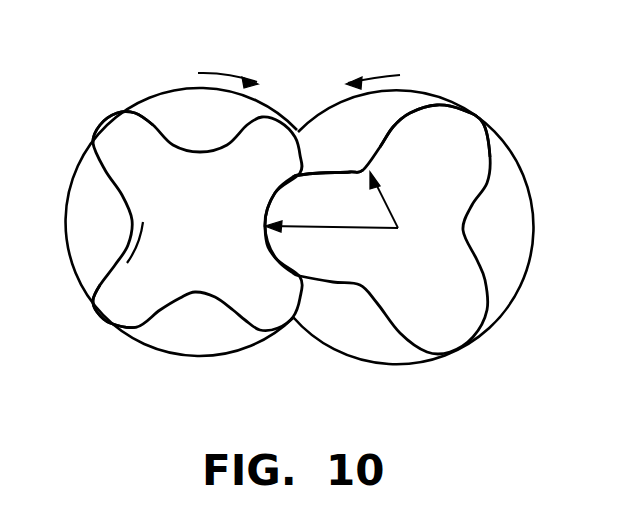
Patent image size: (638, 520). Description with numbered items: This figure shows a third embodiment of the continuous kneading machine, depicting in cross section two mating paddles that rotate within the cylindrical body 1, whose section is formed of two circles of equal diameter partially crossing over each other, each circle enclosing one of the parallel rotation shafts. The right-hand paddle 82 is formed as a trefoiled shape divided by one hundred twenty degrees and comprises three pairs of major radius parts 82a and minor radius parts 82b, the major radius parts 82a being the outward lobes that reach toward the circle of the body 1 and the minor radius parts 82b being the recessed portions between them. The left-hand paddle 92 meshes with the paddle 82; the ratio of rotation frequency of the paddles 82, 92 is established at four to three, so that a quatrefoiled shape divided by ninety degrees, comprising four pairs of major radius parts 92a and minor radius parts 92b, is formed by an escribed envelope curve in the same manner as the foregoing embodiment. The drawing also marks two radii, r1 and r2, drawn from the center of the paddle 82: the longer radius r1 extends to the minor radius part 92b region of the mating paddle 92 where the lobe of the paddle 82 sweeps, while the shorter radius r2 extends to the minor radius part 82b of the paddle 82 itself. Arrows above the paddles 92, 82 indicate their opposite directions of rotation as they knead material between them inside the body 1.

The cylindrical body 1 is at (268, 105).
The paddle 92 is at (140, 180).
The major radius parts 92a is at (128, 123).
The minor radius parts 92b is at (93, 300).
The paddle 82 is at (447, 159).
The major radius parts 82a is at (443, 125).
The minor radius parts 82b is at (383, 170).
The radius r1 is at (331, 214).
The radius r2 is at (394, 200).